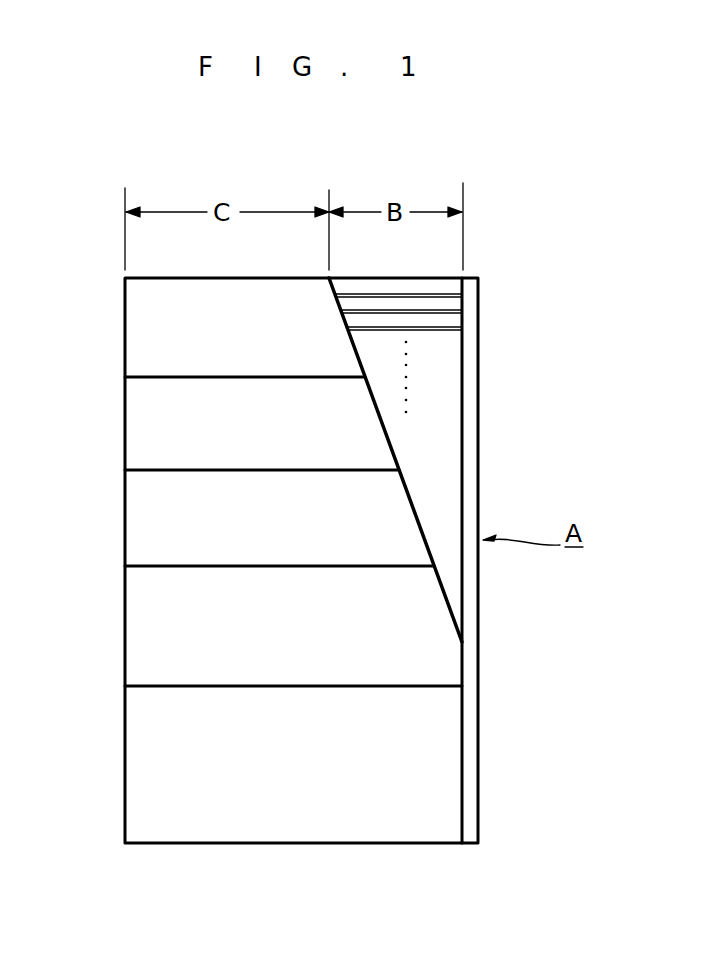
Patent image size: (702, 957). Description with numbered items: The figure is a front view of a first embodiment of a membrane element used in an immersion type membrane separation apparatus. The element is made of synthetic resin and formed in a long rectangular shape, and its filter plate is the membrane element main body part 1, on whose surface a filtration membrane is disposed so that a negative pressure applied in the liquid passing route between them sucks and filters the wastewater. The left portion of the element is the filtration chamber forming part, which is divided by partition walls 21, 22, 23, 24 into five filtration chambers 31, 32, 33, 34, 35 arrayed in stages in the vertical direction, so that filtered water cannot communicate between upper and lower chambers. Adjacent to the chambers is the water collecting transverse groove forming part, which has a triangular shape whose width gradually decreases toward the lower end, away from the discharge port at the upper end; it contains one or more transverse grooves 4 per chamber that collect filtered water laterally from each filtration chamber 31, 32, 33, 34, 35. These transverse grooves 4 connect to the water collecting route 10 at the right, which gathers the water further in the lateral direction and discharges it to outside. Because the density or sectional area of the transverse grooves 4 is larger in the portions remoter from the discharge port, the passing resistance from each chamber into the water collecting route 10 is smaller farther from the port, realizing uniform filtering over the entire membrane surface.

The membrane element main body part 1 is at (480, 365).
The transverse groove 4 is at (450, 292).
The water collecting route 10 is at (470, 438).
The partition wall 21 is at (148, 378).
The partition wall 22 is at (155, 472).
The partition wall 23 is at (160, 567).
The partition wall 24 is at (165, 688).
The filtration chamber 31 is at (155, 316).
The filtration chamber 32 is at (155, 428).
The filtration chamber 33 is at (165, 531).
The filtration chamber 34 is at (425, 652).
The filtration chamber 35 is at (438, 740).